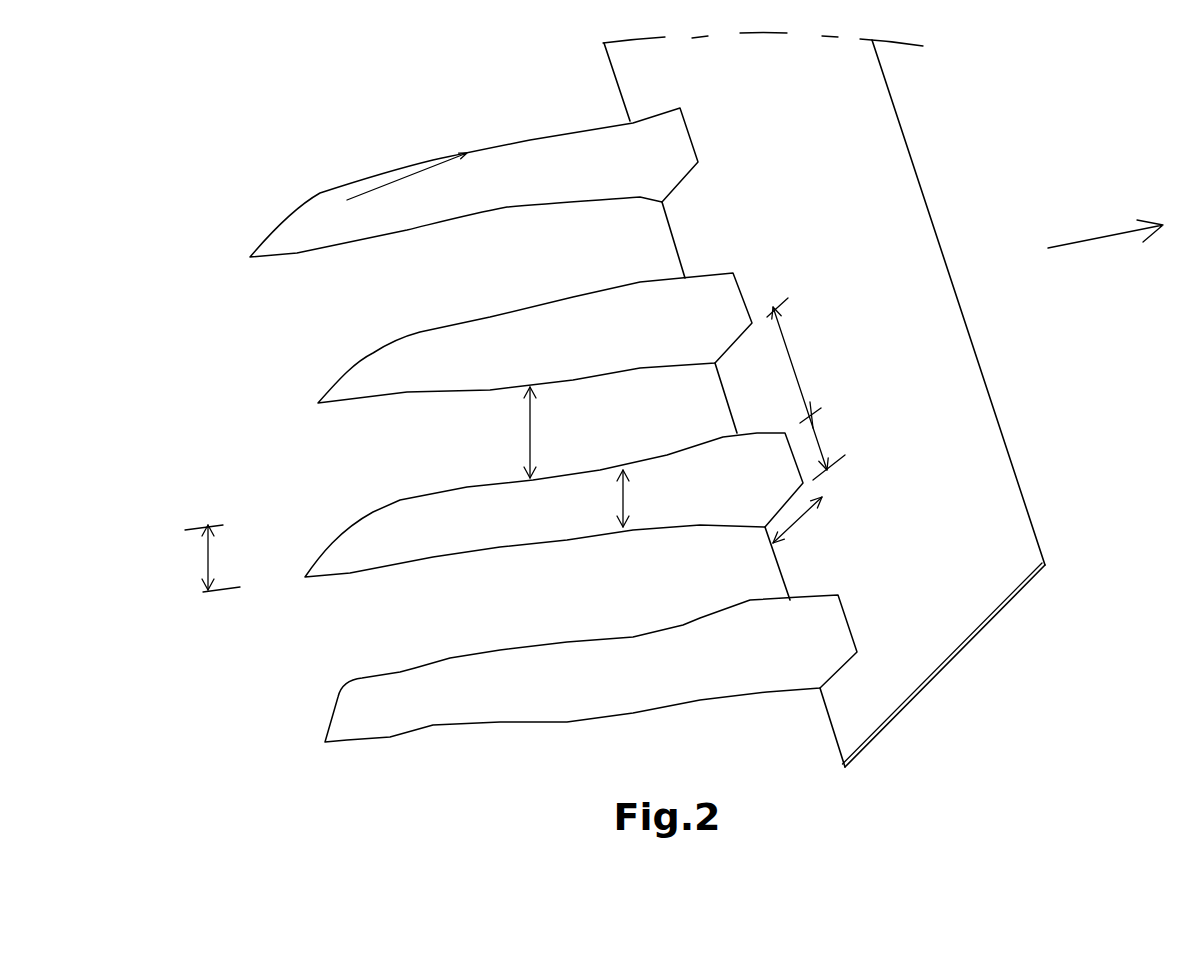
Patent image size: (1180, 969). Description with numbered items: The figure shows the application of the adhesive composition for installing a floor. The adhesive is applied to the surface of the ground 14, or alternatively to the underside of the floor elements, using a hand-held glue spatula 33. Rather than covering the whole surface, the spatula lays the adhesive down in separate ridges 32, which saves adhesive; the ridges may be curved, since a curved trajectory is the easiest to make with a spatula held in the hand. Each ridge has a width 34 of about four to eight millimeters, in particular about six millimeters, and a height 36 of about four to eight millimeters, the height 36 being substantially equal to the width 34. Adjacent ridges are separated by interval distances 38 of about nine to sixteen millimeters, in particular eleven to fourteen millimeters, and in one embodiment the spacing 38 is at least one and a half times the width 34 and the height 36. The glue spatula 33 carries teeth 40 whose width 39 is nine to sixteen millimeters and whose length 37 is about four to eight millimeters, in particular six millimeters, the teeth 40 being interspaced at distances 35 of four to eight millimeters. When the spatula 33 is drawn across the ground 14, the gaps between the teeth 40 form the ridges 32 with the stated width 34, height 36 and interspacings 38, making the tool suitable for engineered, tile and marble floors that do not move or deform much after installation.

The ground 14 is at (1153, 589).
The ridges 32 is at (420, 180).
The glue spatula 33 is at (992, 493).
The width 34 is at (210, 553).
The distances 35 is at (818, 445).
The height 36 is at (630, 495).
The length 37 is at (797, 523).
The interval distances 38 is at (532, 440).
The width 39 is at (788, 348).
The teeth 40 is at (717, 246).